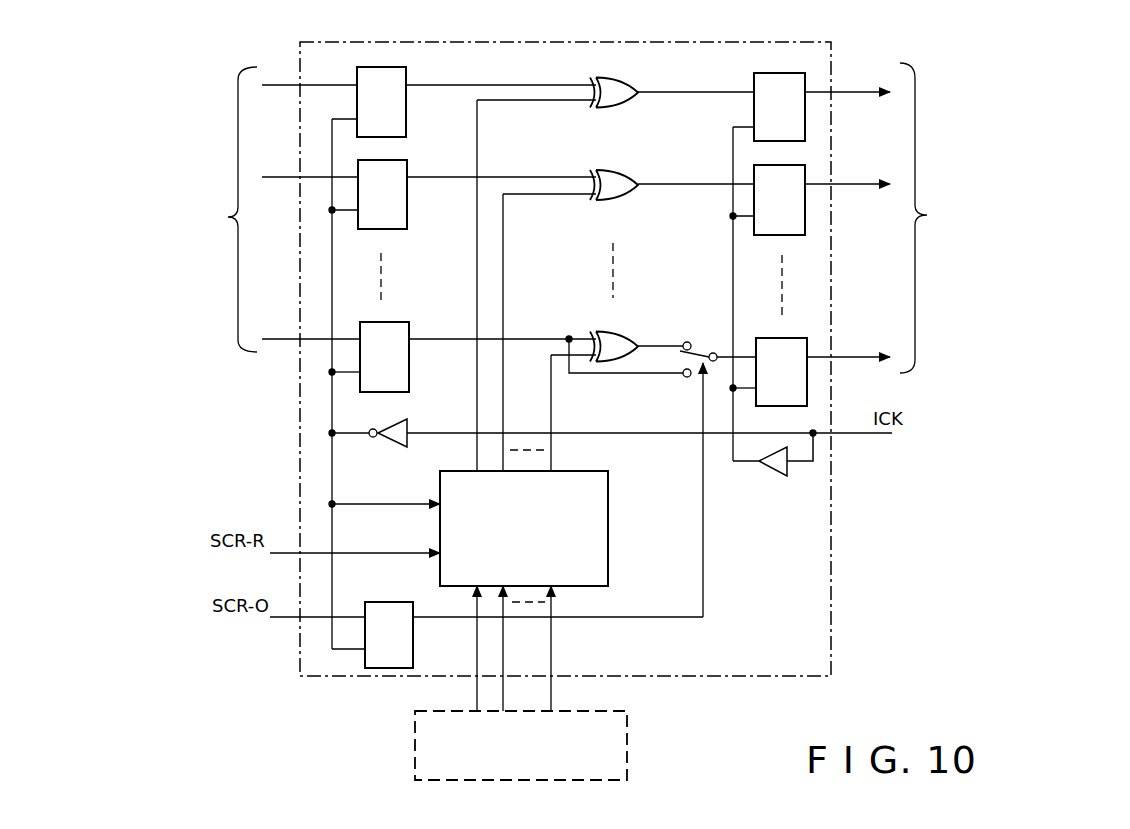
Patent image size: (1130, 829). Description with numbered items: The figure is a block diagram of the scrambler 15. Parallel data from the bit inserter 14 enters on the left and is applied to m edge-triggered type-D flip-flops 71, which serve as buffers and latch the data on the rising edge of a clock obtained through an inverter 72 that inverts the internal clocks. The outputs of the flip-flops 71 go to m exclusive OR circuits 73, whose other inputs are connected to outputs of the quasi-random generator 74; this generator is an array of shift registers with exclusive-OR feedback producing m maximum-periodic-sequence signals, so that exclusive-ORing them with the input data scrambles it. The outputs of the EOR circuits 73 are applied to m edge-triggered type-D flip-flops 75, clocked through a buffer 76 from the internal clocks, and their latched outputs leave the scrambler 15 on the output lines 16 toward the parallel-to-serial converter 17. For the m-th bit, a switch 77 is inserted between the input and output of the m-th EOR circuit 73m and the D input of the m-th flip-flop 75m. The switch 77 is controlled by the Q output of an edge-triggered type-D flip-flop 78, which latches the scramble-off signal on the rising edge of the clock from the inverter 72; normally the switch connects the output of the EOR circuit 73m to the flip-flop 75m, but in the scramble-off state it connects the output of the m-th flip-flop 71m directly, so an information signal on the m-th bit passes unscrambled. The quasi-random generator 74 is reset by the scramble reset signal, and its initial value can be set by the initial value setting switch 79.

The bit inserter 14 is at (210, 209).
The scrambler 15 is at (300, 56).
The scrambler output lines 16 is at (876, 80).
The parallel-to-serial converter 17 is at (990, 218).
The edge-triggered type-D flip-flops 71 is at (406, 118).
The m-th flip-flop 71m is at (402, 322).
The inverter 72 is at (405, 422).
The exclusive OR circuits 73 is at (630, 107).
The m-th EOR circuit 73m is at (630, 332).
The quasi-random generator 74 is at (608, 532).
The edge-triggered type-D flip-flops 75 is at (754, 76).
The m-th flip-flop 75m is at (808, 343).
The buffer 76 is at (771, 478).
The switch 77 is at (706, 342).
The edge-triggered type-D flip-flop 78 is at (413, 645).
The initial value setting switch 79 is at (415, 718).